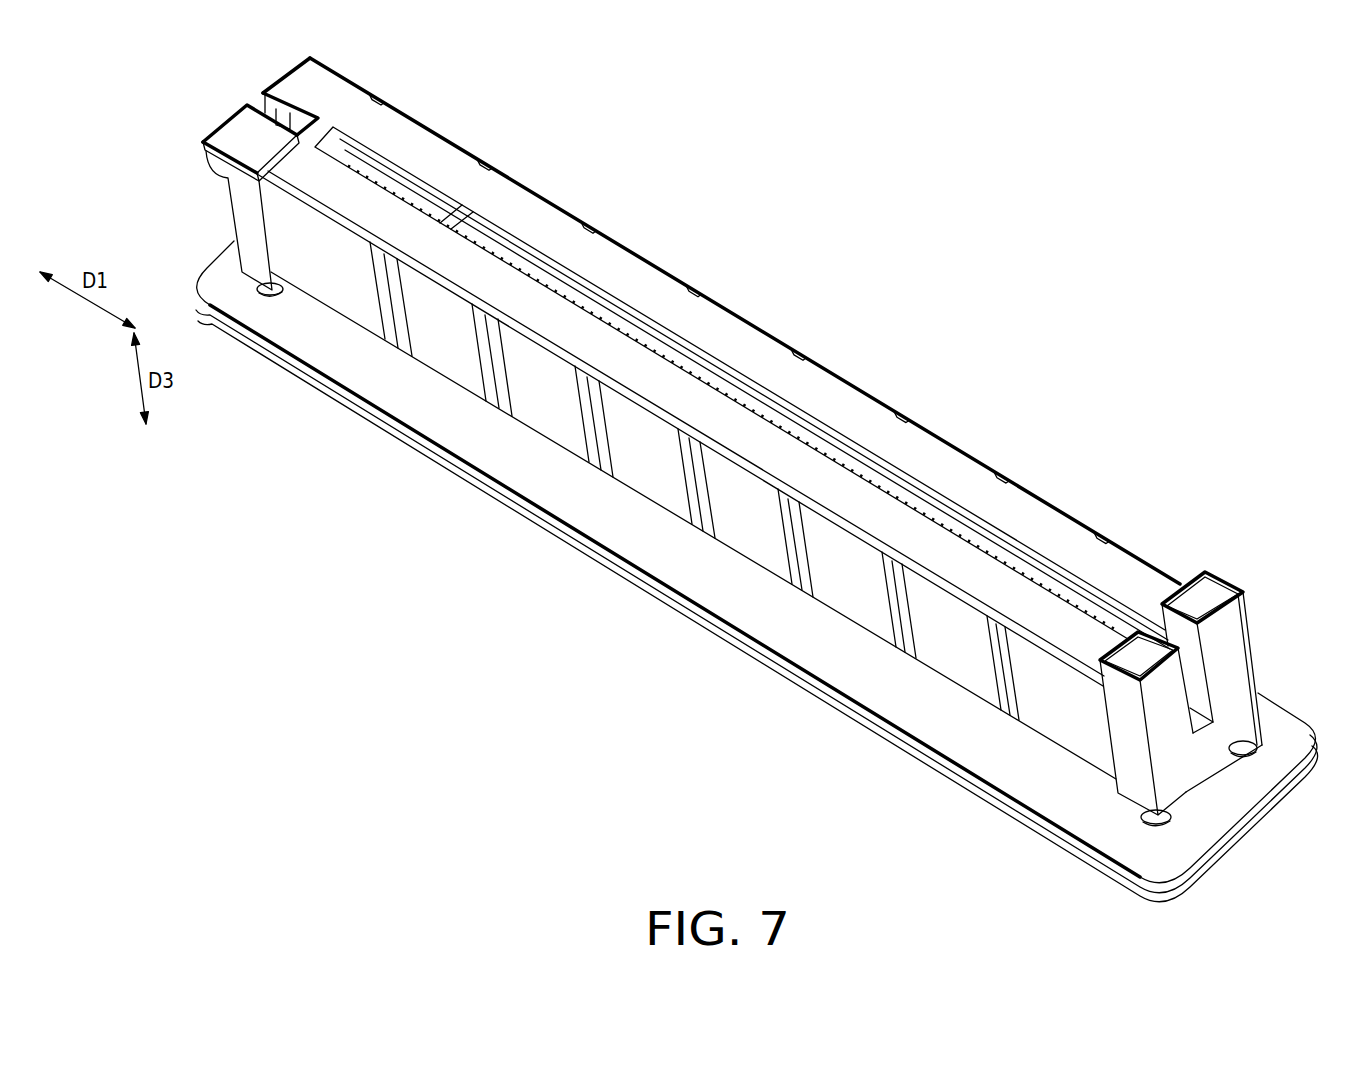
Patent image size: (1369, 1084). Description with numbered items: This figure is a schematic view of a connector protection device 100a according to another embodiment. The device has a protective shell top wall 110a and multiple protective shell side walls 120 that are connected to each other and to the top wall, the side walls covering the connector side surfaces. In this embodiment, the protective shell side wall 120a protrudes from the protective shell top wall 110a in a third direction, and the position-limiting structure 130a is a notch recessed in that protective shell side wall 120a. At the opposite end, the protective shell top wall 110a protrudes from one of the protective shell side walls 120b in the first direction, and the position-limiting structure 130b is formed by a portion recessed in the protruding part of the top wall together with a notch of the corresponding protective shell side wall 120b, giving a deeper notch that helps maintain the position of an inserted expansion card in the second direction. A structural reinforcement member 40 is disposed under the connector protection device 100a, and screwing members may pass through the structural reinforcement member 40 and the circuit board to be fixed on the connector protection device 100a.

The structural reinforcement member 40 is at (607, 568).
The connector protection device 100a is at (843, 263).
The protective shell top wall 110a is at (245, 133).
The protective shell side walls 120 is at (1152, 567).
The protective shell side wall 120a is at (1173, 747).
The protective shell side wall 120b is at (232, 218).
The position-limiting structure 130a is at (1199, 686).
The position-limiting structure 130b is at (281, 113).